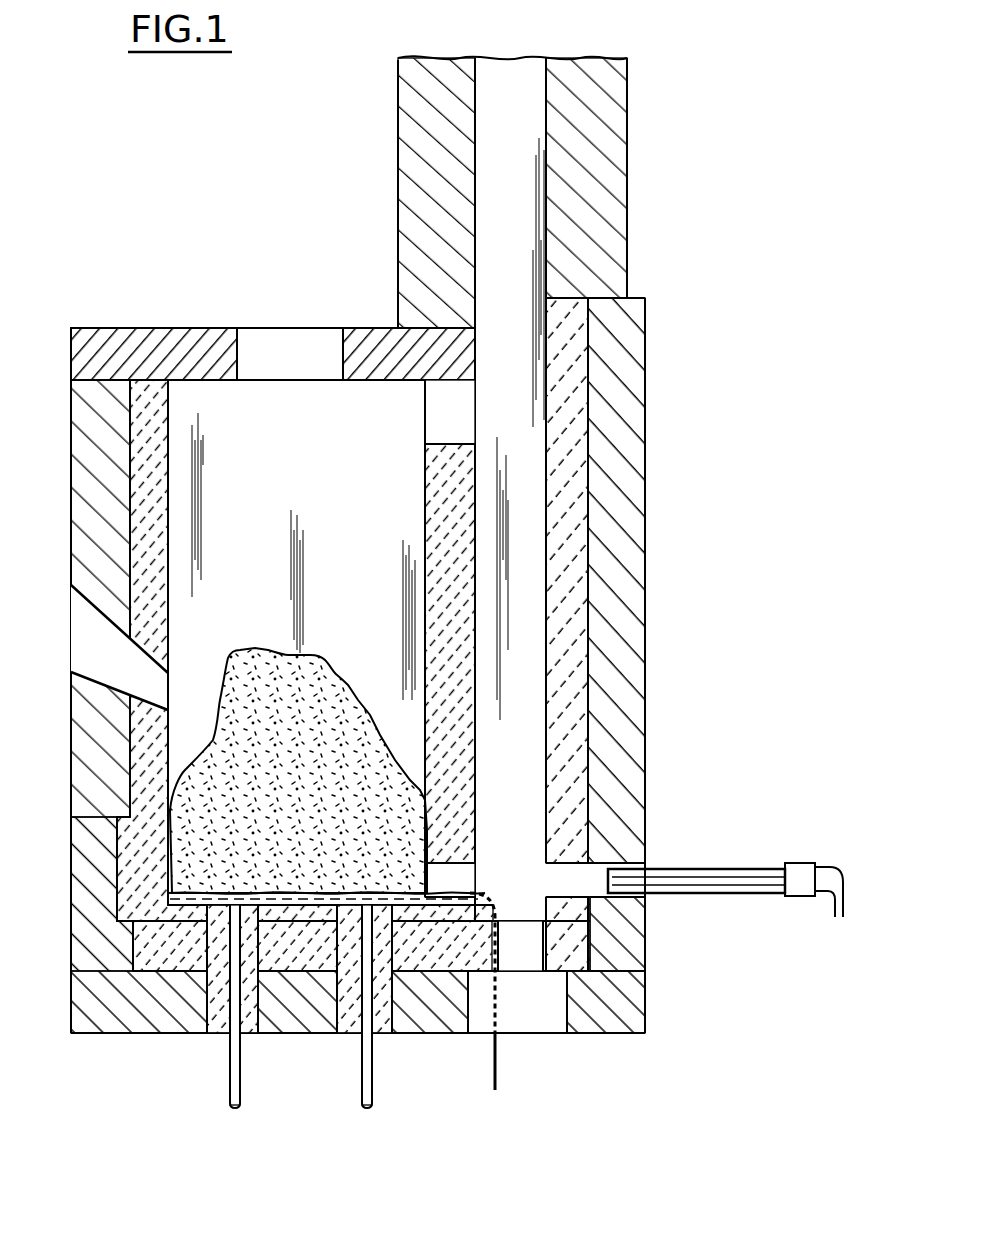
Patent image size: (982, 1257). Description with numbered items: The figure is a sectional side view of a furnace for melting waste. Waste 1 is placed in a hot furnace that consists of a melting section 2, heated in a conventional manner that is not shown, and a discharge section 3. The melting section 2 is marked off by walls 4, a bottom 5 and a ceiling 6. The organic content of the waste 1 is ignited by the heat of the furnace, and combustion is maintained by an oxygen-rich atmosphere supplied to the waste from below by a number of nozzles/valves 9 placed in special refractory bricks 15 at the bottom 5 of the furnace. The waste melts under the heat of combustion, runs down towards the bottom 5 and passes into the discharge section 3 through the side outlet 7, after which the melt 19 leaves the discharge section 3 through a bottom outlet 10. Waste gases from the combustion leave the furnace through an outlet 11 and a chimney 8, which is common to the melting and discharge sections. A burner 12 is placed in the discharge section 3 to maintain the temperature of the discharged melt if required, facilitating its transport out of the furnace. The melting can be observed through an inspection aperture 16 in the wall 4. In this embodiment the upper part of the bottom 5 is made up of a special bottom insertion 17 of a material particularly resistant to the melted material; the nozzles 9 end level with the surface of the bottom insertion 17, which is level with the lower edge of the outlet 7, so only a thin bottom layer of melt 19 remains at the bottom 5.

The waste 1 is at (332, 735).
The melting section 2 is at (245, 507).
The discharge section 3 is at (530, 583).
The walls 4 is at (92, 528).
The bottom 5 is at (170, 940).
The ceiling 6 is at (175, 343).
The side outlet 7 is at (473, 880).
The chimney 8 is at (527, 177).
The nozzles/valves 9 is at (237, 1086).
The bottom outlet 10 is at (525, 948).
The outlet 11 is at (470, 407).
The burner 12 is at (728, 880).
The refractory bricks 15 is at (222, 985).
The inspection aperture 16 is at (95, 643).
The bottom insertion 17 is at (170, 907).
The melt 19 is at (215, 893).